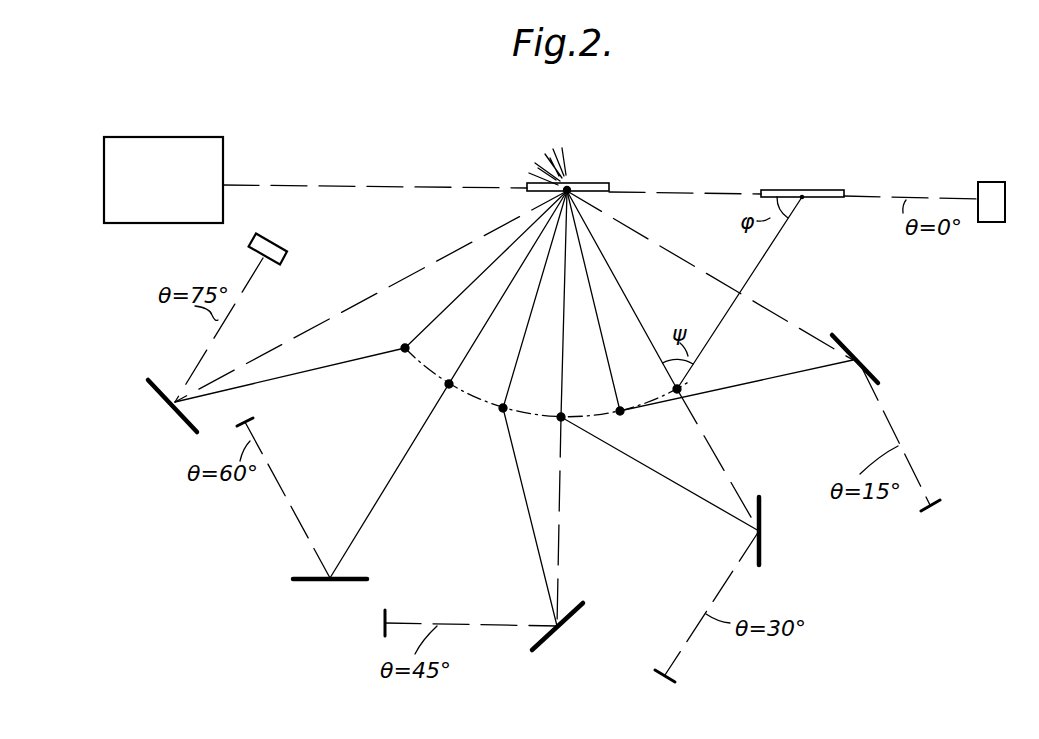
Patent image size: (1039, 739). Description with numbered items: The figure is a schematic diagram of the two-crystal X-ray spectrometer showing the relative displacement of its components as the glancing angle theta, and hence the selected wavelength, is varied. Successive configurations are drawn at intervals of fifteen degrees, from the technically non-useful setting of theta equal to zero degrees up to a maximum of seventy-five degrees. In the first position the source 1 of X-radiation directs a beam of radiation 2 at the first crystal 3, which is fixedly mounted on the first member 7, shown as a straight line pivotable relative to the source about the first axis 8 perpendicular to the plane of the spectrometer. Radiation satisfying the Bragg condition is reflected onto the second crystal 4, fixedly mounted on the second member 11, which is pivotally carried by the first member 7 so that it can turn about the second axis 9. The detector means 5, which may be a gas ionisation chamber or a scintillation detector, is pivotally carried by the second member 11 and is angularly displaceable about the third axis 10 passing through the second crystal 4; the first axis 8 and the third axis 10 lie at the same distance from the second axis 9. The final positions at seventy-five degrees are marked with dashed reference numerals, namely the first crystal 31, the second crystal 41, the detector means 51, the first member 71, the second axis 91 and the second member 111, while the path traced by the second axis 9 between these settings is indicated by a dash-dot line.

The source 1 is at (190, 148).
The beam of radiation 2 is at (367, 186).
The first crystal 3 is at (602, 184).
The first crystal (final position) 31 is at (562, 157).
The second crystal 4 is at (830, 191).
The second crystal (final position) 41 is at (148, 390).
The detector means 5 is at (990, 183).
The detector means (final position) 51 is at (289, 253).
The first member 7 is at (625, 292).
The first member (final position) 71 is at (458, 298).
The first axis 8 is at (575, 186).
The second axis 9 is at (682, 388).
The second axis (final position) 91 is at (403, 345).
The third axis 10 is at (803, 195).
The second member 11 is at (772, 258).
The second member (final position) 111 is at (334, 366).